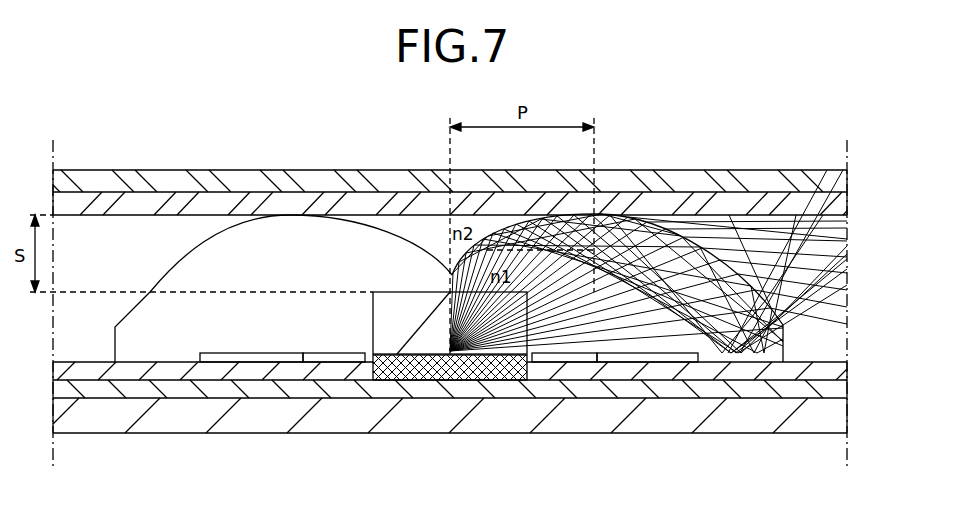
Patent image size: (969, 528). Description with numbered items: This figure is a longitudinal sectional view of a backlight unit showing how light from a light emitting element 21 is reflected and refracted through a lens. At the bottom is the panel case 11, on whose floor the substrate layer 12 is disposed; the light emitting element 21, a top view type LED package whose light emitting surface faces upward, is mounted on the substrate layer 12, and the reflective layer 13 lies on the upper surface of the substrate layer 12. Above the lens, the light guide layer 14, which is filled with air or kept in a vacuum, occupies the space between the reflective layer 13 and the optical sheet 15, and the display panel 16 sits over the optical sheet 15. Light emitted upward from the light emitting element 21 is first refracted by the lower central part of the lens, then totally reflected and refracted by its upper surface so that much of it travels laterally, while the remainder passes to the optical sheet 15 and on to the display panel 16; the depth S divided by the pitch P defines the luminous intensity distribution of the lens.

The panel case 11 is at (845, 421).
The substrate layer 12 is at (845, 392).
The reflective layer 13 is at (850, 372).
The light guide layer 14 is at (812, 252).
The optical sheet 15 is at (843, 197).
The display panel 16 is at (833, 181).
The light emitting element 21 is at (456, 380).